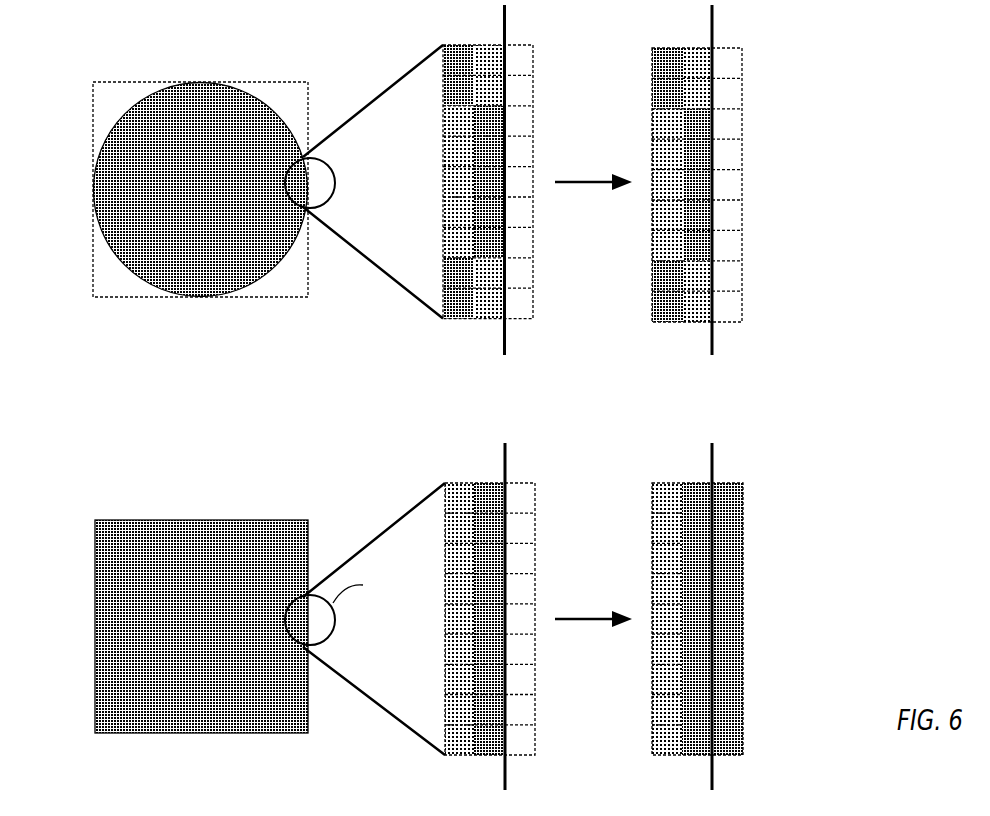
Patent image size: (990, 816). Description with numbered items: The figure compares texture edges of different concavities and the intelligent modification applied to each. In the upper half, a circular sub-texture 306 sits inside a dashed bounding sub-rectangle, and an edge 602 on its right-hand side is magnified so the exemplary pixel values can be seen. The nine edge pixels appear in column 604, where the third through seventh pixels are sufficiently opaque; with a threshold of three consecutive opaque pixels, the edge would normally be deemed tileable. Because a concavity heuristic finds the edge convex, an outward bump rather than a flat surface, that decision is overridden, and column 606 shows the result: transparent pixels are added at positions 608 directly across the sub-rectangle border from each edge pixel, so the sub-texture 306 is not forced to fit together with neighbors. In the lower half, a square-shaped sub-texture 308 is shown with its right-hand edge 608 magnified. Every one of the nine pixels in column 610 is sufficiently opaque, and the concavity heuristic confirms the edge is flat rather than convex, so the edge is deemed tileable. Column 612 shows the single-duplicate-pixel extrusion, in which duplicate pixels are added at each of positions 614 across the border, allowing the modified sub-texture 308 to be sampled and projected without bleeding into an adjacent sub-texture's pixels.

The circular sub-texture 306 is at (125, 80).
The square-shaped sub-texture 308 is at (122, 520).
The edge 602 is at (333, 166).
The column 604 is at (490, 45).
The column 606 is at (722, 48).
The edge 608 is at (515, 346).
The column 610 is at (490, 483).
The column 612 is at (728, 483).
The positions 614 is at (757, 736).